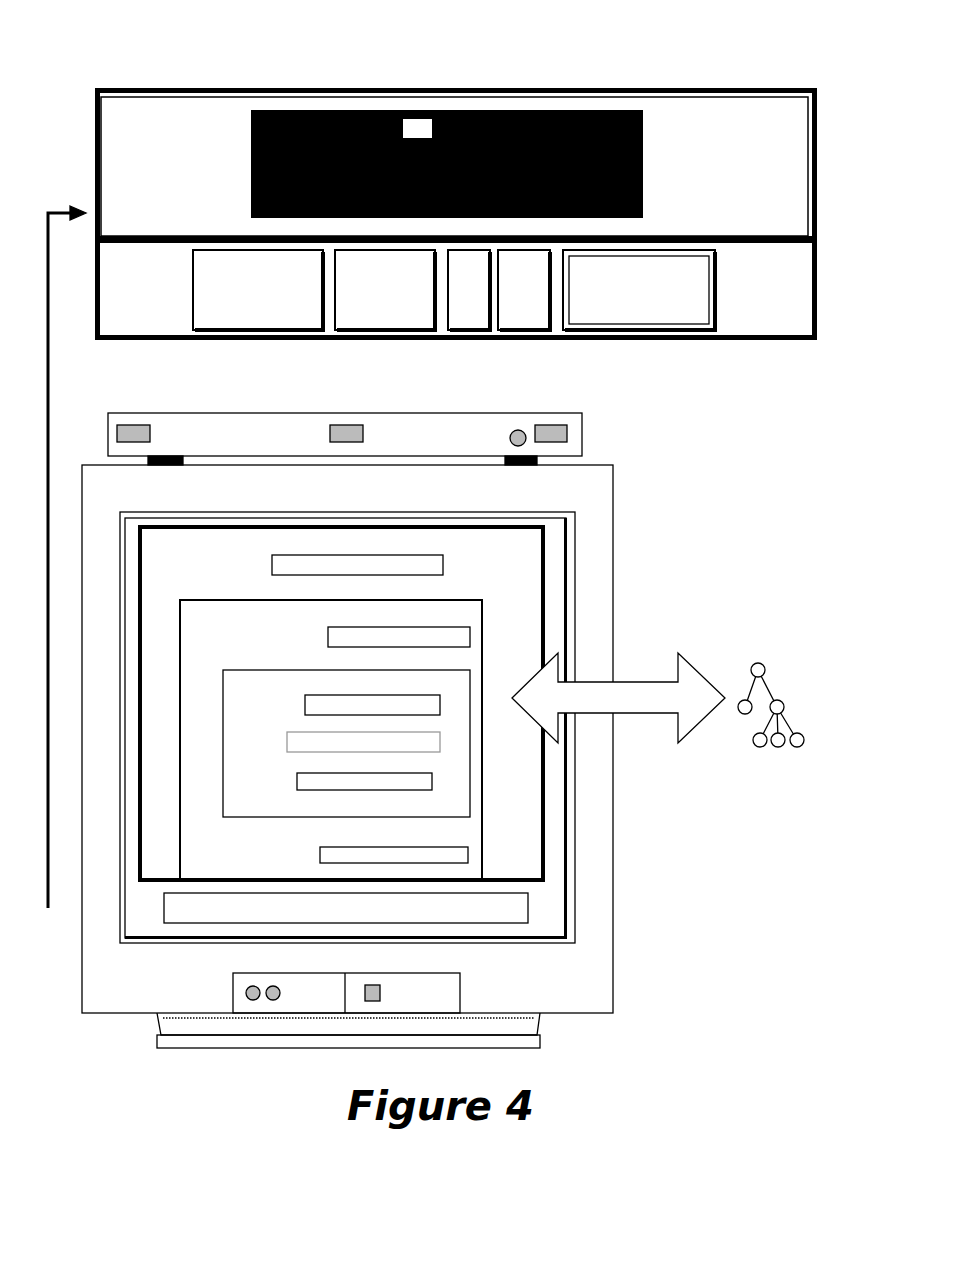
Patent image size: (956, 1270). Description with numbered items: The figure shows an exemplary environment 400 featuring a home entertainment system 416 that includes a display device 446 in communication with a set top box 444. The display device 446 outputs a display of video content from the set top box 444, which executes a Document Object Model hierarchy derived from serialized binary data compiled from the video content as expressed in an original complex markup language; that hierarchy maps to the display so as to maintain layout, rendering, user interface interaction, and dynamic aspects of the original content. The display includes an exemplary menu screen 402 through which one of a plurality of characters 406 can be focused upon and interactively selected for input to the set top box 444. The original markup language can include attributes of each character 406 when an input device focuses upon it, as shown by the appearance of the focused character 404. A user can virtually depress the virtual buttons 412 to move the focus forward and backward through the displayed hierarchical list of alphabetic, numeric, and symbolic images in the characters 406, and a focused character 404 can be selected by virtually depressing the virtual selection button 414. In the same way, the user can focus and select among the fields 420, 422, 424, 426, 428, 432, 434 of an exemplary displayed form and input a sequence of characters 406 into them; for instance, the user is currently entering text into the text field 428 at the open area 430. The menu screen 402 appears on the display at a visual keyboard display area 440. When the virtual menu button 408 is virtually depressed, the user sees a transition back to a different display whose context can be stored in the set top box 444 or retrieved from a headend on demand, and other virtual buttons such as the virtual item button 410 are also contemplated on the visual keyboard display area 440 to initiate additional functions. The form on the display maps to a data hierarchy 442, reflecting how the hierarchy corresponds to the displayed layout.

The exemplary environment 400 is at (434, 209).
The menu screen 402 is at (708, 89).
The focused character 404 is at (420, 130).
The characters 406 is at (645, 165).
The virtual menu button 408 is at (212, 341).
The Item button 410 is at (333, 342).
The virtual buttons 412 is at (500, 342).
The virtual selection button 414 is at (713, 344).
The home entertainment system 416 is at (430, 725).
The field 420 is at (445, 565).
The field 422 is at (470, 635).
The field 424 is at (440, 700).
The field 426 is at (588, 715).
The text field 428 is at (438, 742).
The open area 430 is at (428, 780).
The field 432 is at (337, 748).
The field 434 is at (468, 855).
The visual keyboard display area 440 is at (215, 925).
The data tree 442 is at (745, 654).
The set top box 444 is at (187, 413).
The display device 446 is at (347, 756).